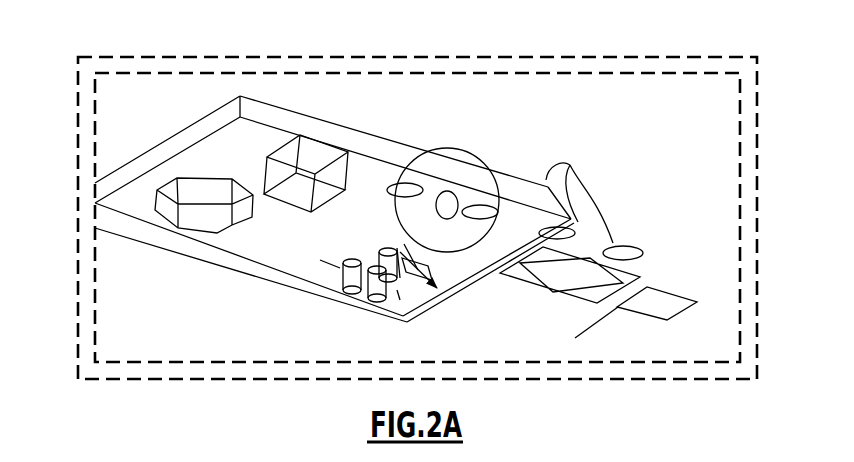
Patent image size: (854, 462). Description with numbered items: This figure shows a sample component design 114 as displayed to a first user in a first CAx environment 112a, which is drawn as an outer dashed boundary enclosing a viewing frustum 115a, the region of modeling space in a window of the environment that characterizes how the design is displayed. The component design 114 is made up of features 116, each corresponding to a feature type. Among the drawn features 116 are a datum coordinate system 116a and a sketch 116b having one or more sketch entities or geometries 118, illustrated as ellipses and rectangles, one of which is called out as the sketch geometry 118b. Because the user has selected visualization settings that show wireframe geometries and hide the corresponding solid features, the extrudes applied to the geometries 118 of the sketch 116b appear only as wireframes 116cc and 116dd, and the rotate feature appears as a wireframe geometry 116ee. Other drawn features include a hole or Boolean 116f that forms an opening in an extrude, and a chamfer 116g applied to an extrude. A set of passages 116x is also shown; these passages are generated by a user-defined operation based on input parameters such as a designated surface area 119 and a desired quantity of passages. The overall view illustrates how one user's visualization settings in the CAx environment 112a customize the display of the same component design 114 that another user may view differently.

The first CAx environment 112a is at (211, 55).
The viewing frustum 115a is at (125, 70).
The component design 114 is at (182, 128).
The wireframe 116cc is at (388, 134).
The hole or Boolean 116f is at (195, 176).
The wireframe 116dd is at (334, 140).
The wireframe geometry 116ee is at (473, 148).
The sketch geometry 118b is at (487, 198).
The feature 116 is at (570, 166).
The sketch 116b is at (656, 268).
The sketch entities or geometries 118 is at (468, 285).
The set of passages 116x is at (398, 262).
The chamfer 116g is at (395, 308).
The datum coordinate system 116a is at (397, 290).
The surface area 119 is at (330, 260).